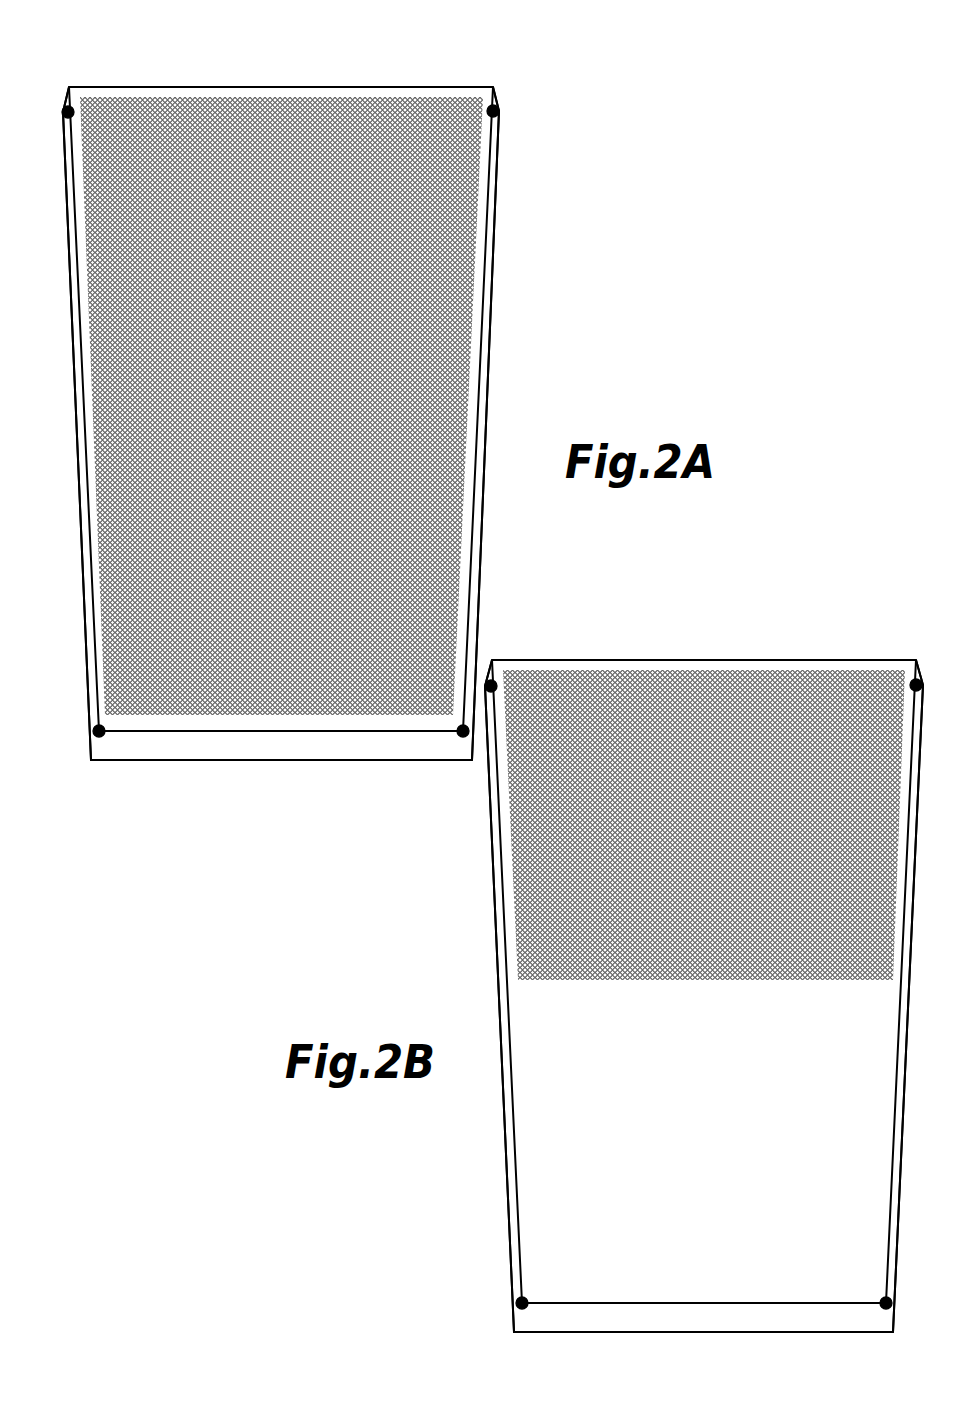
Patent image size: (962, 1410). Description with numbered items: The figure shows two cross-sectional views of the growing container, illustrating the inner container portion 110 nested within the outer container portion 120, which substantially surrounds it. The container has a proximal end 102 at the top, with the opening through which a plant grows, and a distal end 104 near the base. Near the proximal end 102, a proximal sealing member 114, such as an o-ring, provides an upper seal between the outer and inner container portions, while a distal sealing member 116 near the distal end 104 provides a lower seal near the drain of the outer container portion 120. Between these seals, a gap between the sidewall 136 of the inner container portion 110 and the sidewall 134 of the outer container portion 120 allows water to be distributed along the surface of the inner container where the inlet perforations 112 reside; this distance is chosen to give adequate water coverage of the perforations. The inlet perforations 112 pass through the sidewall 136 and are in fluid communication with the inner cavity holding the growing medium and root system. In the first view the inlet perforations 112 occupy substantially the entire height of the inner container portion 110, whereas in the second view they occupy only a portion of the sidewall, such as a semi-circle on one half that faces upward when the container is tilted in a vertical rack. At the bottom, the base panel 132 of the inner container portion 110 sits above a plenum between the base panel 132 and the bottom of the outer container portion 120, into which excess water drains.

In FIG. 2A, the proximal end 102 is at (193, 86).
In FIG. 2B, the proximal end 102 is at (620, 659).
In FIG. 2A, the distal end 104 is at (258, 763).
In FIG. 2B, the distal end 104 is at (681, 1334).
In FIG. 2A, the inner container portion 110 is at (350, 86).
In FIG. 2B, the inner container portion 110 is at (775, 659).
In FIG. 2A, the inlet perforations 112 is at (254, 96).
In FIG. 2B, the inlet perforations 112 is at (680, 669).
In FIG. 2A, the proximal sealing member 114 is at (64, 110).
In FIG. 2B, the proximal sealing member 114 is at (491, 686).
In FIG. 2A, the distal sealing member 116 is at (97, 731).
In FIG. 2B, the distal sealing member 116 is at (521, 1303).
In FIG. 2A, the outer container portion 120 is at (329, 752).
In FIG. 2B, the outer container portion 120 is at (750, 1322).
In FIG. 2A, the base panel 132 is at (205, 733).
In FIG. 2B, the base panel 132 is at (626, 1305).
In FIG. 2A, the sidewall of the outer container portion 134 is at (482, 532).
In FIG. 2B, the sidewall of the outer container portion 134 is at (506, 1100).
In FIG. 2A, the sidewall of the inner container portion 136 is at (470, 475).
In FIG. 2B, the sidewall of the inner container portion 136 is at (512, 1052).